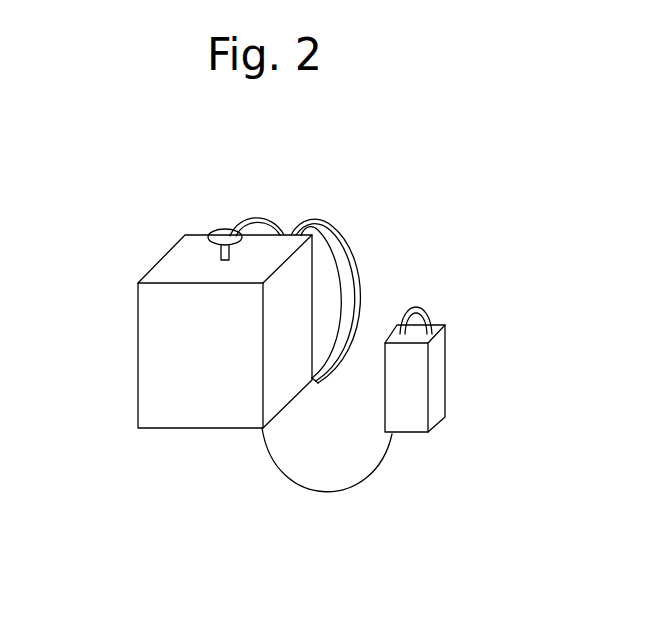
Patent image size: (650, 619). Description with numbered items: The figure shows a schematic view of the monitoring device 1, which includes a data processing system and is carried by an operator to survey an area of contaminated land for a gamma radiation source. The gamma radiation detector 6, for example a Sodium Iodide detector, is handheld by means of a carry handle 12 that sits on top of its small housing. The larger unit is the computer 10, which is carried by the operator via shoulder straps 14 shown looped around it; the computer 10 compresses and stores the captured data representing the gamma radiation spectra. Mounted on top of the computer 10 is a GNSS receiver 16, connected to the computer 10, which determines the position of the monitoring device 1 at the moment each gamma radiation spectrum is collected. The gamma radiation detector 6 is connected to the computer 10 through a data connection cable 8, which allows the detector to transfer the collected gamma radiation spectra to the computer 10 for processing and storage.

The monitoring device 1 is at (85, 256).
The gamma radiation detector 6 is at (446, 361).
The data connection cable 8 is at (325, 493).
The computer 10 is at (152, 395).
The carry handle 12 is at (415, 307).
The shoulder straps 14 is at (312, 222).
The GNSS receiver 16 is at (221, 232).